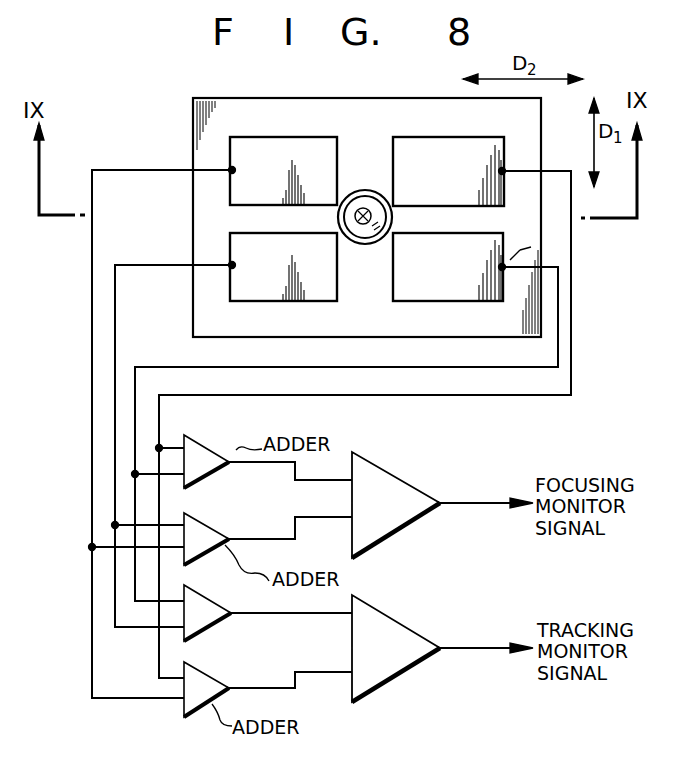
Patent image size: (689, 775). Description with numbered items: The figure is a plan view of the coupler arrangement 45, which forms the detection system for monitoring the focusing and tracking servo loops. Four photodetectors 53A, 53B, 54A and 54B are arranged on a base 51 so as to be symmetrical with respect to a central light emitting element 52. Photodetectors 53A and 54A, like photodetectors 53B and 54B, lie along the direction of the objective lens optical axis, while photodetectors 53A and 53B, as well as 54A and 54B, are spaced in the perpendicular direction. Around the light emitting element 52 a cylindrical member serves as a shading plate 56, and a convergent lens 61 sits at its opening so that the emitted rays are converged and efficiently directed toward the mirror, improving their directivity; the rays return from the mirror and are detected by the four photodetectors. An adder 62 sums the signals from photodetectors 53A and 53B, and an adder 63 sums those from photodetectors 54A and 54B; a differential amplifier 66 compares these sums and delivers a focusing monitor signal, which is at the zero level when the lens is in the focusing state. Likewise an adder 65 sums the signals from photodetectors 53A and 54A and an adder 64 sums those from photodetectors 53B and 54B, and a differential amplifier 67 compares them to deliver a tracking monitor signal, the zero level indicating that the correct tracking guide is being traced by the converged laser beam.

The coupler arrangement 45 is at (383, 98).
The first photodetector 53A is at (267, 153).
The third photodetector 54A is at (457, 153).
The second photodetector 53B is at (270, 302).
The fourth photodetector 54B is at (462, 302).
The shading plate 56 is at (343, 206).
The light emitting element 52 is at (366, 218).
The convergent lens 61 is at (360, 244).
The base 51 is at (523, 258).
The adder 63 is at (217, 462).
The adder 62 is at (213, 533).
The adder 64 is at (217, 607).
The adder 65 is at (217, 684).
The differential amplifier 66 is at (409, 492).
The differential amplifier 67 is at (409, 628).